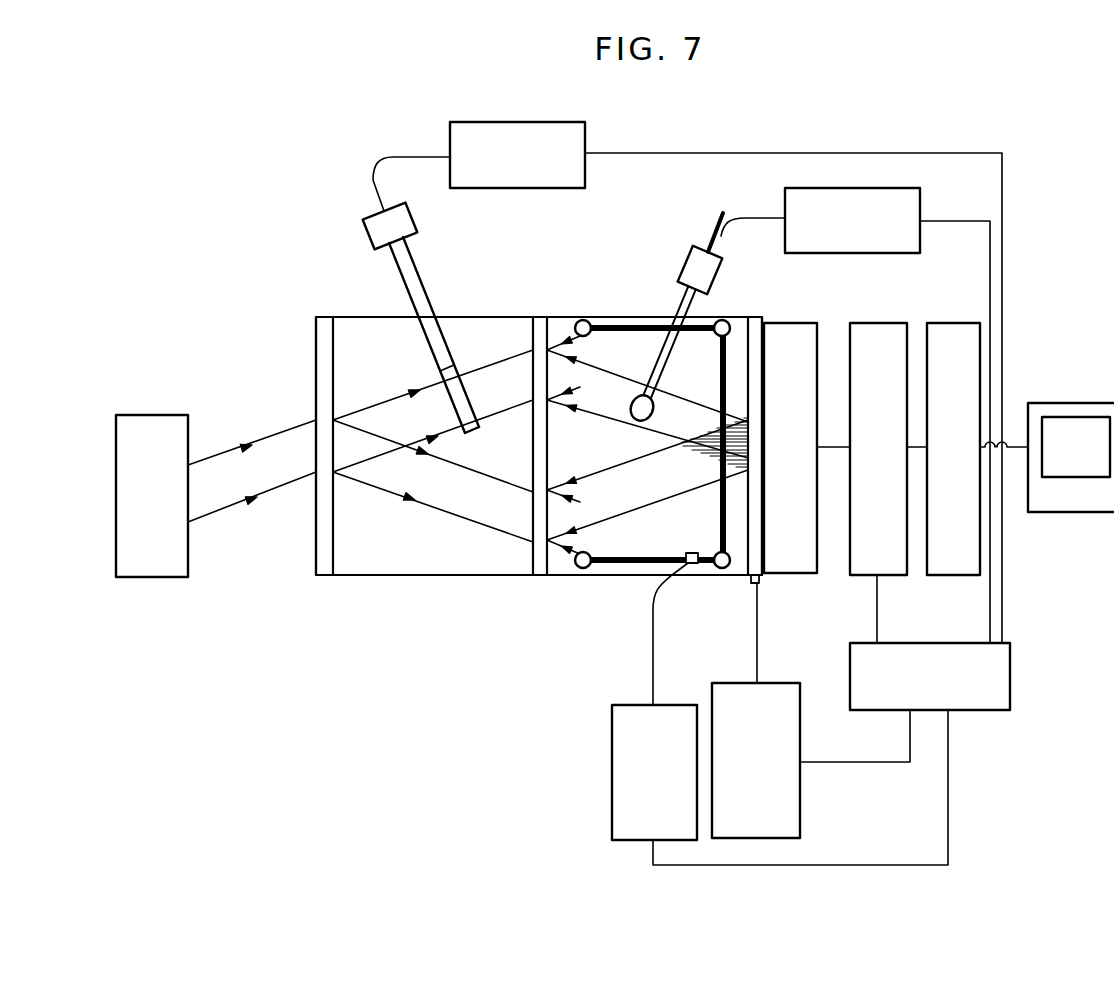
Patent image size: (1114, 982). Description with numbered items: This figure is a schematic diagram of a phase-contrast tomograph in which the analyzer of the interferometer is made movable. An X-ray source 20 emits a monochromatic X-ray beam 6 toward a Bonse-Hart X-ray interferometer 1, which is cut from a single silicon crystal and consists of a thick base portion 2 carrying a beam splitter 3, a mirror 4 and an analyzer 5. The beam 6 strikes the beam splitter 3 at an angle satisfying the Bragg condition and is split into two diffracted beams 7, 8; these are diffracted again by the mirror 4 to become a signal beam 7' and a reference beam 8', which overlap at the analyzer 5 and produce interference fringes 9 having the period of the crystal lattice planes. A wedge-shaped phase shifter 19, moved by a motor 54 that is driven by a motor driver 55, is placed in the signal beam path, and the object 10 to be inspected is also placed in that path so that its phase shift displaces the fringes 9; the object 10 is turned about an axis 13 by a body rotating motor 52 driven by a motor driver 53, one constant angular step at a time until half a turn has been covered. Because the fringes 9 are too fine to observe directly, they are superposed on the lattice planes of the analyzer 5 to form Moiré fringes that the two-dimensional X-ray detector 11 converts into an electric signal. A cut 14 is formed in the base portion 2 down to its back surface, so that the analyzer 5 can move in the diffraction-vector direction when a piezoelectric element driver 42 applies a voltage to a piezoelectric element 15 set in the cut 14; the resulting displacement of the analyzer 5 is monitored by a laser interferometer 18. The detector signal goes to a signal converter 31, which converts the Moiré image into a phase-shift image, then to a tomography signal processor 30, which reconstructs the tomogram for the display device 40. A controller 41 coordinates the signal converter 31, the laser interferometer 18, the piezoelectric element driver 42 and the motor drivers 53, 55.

The Bonse-Hart X-ray interferometer 1 is at (423, 711).
The base portion 2 is at (539, 474).
The beam splitter 3 is at (325, 317).
The mirror 4 is at (539, 317).
The analyzer 5 is at (753, 317).
The monochromatic X-ray beam 6 is at (252, 471).
The diffracted beam 7 is at (433, 411).
The diffracted beam 8 is at (433, 481).
The signal beam 7' is at (647, 397).
The reference beam 8' is at (647, 487).
The interference fringes 9 is at (736, 412).
The object 10 is at (632, 413).
The two-dimensional X-ray detector 11 is at (810, 323).
The axis 13 is at (716, 222).
The cut 14 is at (637, 325).
The piezoelectric element 15 is at (695, 576).
The laser interferometer 18 is at (800, 826).
The phase shifter 19 is at (470, 408).
The X-ray source 20 is at (155, 415).
The tomography signal processor 30 is at (956, 323).
The signal converter 31 is at (879, 323).
The display device 40 is at (1088, 403).
The controller 41 is at (1010, 697).
The piezoelectric element driver 42 is at (612, 780).
The body rotating motor 52 is at (691, 262).
The motor driver 53 is at (920, 200).
The motor 54 is at (367, 230).
The motor driver 55 is at (587, 178).